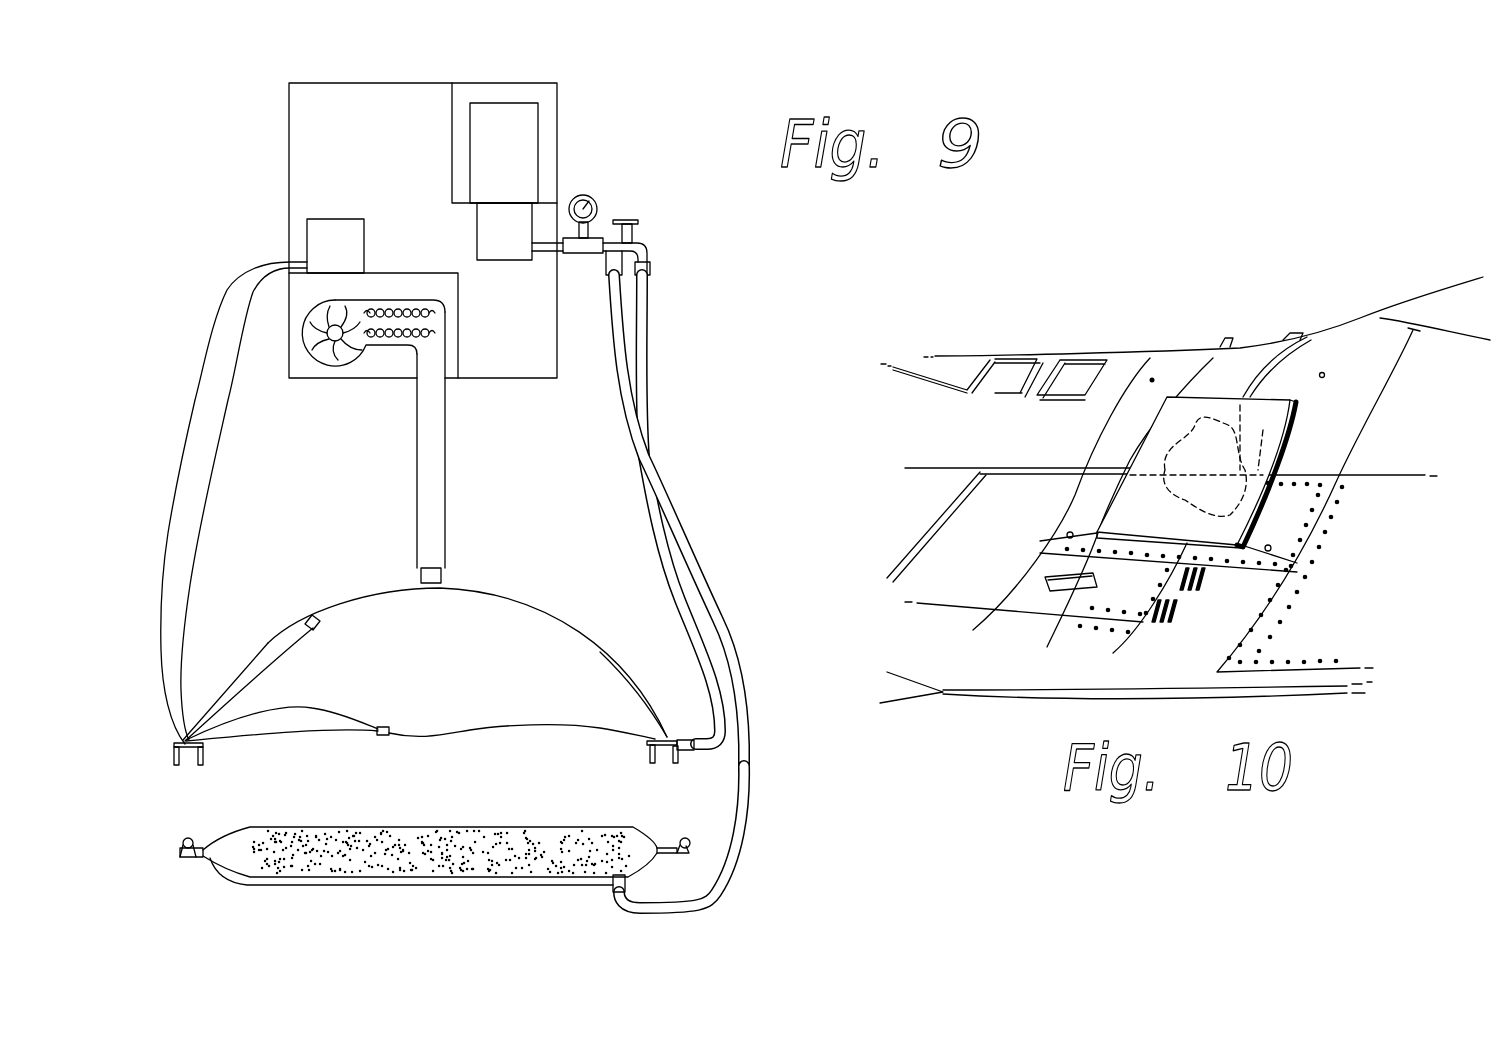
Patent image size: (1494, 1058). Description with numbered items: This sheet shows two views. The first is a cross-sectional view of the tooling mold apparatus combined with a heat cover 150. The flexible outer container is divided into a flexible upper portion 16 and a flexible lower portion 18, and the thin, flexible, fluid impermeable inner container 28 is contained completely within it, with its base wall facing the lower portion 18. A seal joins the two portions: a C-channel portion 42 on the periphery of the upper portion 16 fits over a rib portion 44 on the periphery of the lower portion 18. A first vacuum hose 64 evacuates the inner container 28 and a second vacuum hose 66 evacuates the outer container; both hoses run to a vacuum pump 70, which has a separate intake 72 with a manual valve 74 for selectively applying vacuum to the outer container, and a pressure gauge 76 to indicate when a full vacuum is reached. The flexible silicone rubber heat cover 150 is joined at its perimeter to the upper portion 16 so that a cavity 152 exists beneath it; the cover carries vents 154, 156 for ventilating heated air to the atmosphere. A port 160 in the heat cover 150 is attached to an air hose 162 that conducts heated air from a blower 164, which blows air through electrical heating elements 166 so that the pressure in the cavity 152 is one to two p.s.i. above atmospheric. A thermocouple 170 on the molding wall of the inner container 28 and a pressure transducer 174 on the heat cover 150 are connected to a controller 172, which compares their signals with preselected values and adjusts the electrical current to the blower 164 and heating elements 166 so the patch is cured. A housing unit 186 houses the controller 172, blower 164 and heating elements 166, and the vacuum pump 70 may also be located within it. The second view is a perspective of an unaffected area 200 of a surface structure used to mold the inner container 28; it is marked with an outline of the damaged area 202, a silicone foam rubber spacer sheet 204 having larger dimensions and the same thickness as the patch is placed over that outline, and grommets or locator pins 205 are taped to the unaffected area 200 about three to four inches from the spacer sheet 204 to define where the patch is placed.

In FIG. 9, the housing unit 186 is at (388, 83).
In FIG. 9, the vacuum pump 70 is at (523, 135).
In FIG. 9, the pressure gauge 76 is at (585, 194).
In FIG. 9, the manual valve 74 is at (632, 218).
In FIG. 9, the separate intake 72 is at (651, 263).
In FIG. 9, the second vacuum hose 66 is at (648, 322).
In FIG. 9, the controller 172 is at (312, 232).
In FIG. 9, the blower 164 is at (320, 358).
In FIG. 9, the electrical heating elements 166 is at (382, 337).
In FIG. 9, the air hose 162 is at (447, 452).
In FIG. 9, the port 160 is at (440, 575).
In FIG. 9, the heat cover 150 is at (520, 602).
In FIG. 9, the cavity 152 is at (397, 652).
In FIG. 9, the vent 154 is at (620, 607).
In FIG. 9, the vent 156 is at (264, 647).
In FIG. 9, the pressure transducer 174 is at (315, 628).
In FIG. 9, the thermocouple 170 is at (390, 727).
In FIG. 9, the upper portion 16 is at (583, 727).
In FIG. 9, the first vacuum hose 64 is at (713, 605).
In FIG. 9, the C-channel portion 42 is at (174, 757).
In FIG. 9, the rib portion 44 is at (178, 845).
In FIG. 9, the inner container 28 is at (613, 798).
In FIG. 9, the lower portion 18 is at (660, 852).
In FIG. 10, the spacer sheet 204 is at (1173, 403).
In FIG. 10, the locator pins 205 is at (1322, 372).
In FIG. 10, the unaffected area 200 is at (1293, 421).
In FIG. 10, the damaged area 202 is at (1252, 462).